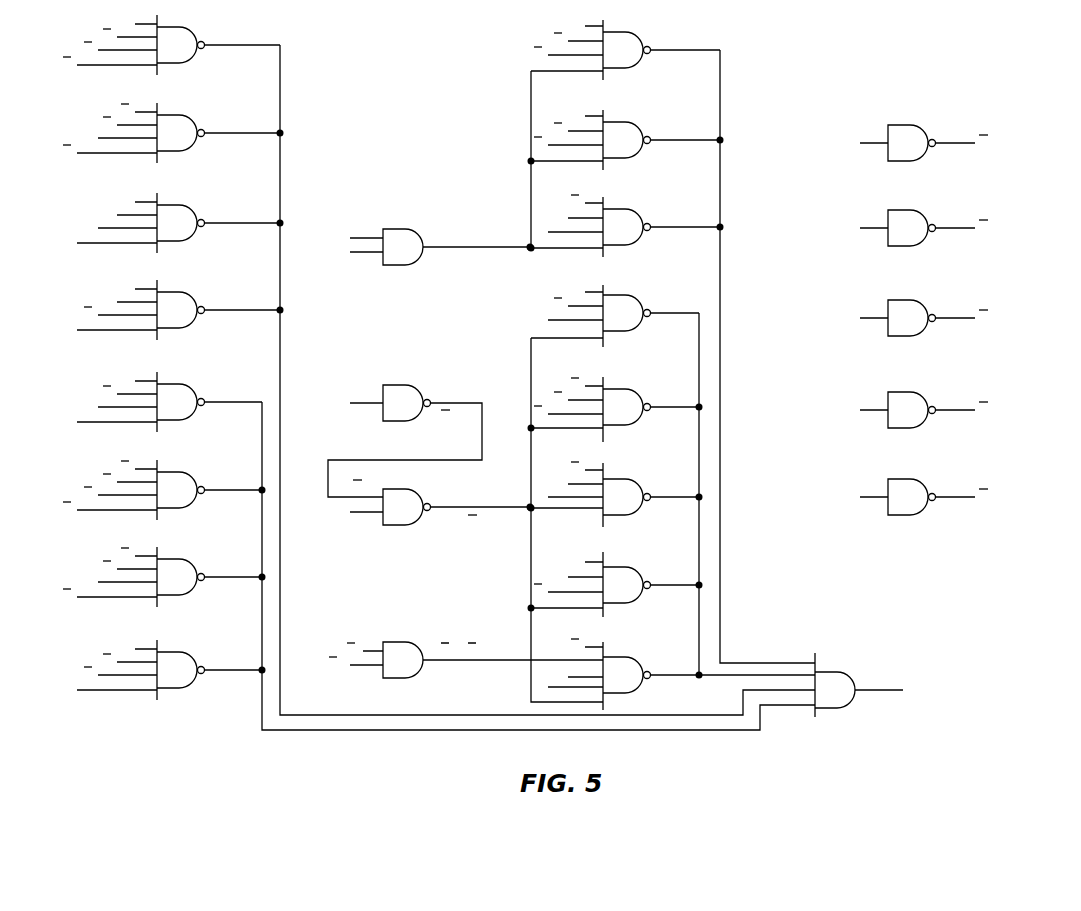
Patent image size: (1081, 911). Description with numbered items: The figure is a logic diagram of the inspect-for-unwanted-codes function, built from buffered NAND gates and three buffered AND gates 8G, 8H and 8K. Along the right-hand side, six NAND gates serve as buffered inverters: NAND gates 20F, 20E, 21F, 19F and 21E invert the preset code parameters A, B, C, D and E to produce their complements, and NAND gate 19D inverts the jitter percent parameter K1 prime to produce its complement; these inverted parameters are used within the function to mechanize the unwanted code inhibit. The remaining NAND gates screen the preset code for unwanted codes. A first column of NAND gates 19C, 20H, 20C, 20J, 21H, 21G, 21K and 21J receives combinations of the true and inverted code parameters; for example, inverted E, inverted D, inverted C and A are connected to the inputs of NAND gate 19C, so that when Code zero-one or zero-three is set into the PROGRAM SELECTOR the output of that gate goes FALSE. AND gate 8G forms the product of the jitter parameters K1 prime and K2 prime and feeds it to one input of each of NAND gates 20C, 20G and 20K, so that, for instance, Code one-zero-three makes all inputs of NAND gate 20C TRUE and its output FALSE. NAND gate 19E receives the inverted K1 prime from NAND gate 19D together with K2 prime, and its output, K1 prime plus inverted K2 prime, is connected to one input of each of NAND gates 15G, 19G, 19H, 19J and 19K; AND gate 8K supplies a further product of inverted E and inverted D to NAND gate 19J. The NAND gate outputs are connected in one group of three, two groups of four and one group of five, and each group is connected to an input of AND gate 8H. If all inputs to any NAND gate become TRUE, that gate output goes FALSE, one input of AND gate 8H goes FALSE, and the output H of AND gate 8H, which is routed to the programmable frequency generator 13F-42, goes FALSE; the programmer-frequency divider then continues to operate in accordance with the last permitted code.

The buffered NAND gate 19C is at (171, 45).
The buffered NAND gate 20H is at (173, 133).
The buffered NAND gate 20C is at (391, 135).
The buffered NAND gate 20J is at (173, 310).
The buffered NAND gate 21H is at (162, 402).
The buffered NAND gate 21G is at (164, 490).
The buffered NAND gate 21K is at (164, 577).
The buffered NAND gate 21J is at (164, 670).
The buffered AND gate 8G is at (423, 250).
The buffered NAND gate 19D is at (405, 441).
The buffered NAND gate 19E is at (433, 504).
The buffered AND gate 8K is at (465, 660).
The buffered NAND gate 20G is at (626, 139).
The buffered NAND gate 20K is at (626, 226).
The buffered NAND gate 19G is at (615, 315).
The buffered NAND gate 19K is at (616, 409).
The buffered NAND gate 19H is at (616, 494).
The buffered NAND gate 15G is at (619, 584).
The buffered NAND gate 19J is at (674, 674).
The buffered AND gate 8H is at (859, 685).
The programmable frequency generator 13F-42 is at (976, 711).
The buffered NAND gate 20F is at (916, 143).
The buffered NAND gate 20E is at (916, 228).
The buffered NAND gate 21F is at (916, 318).
The buffered NAND gate 19F is at (917, 410).
The buffered NAND gate 21E is at (916, 497).